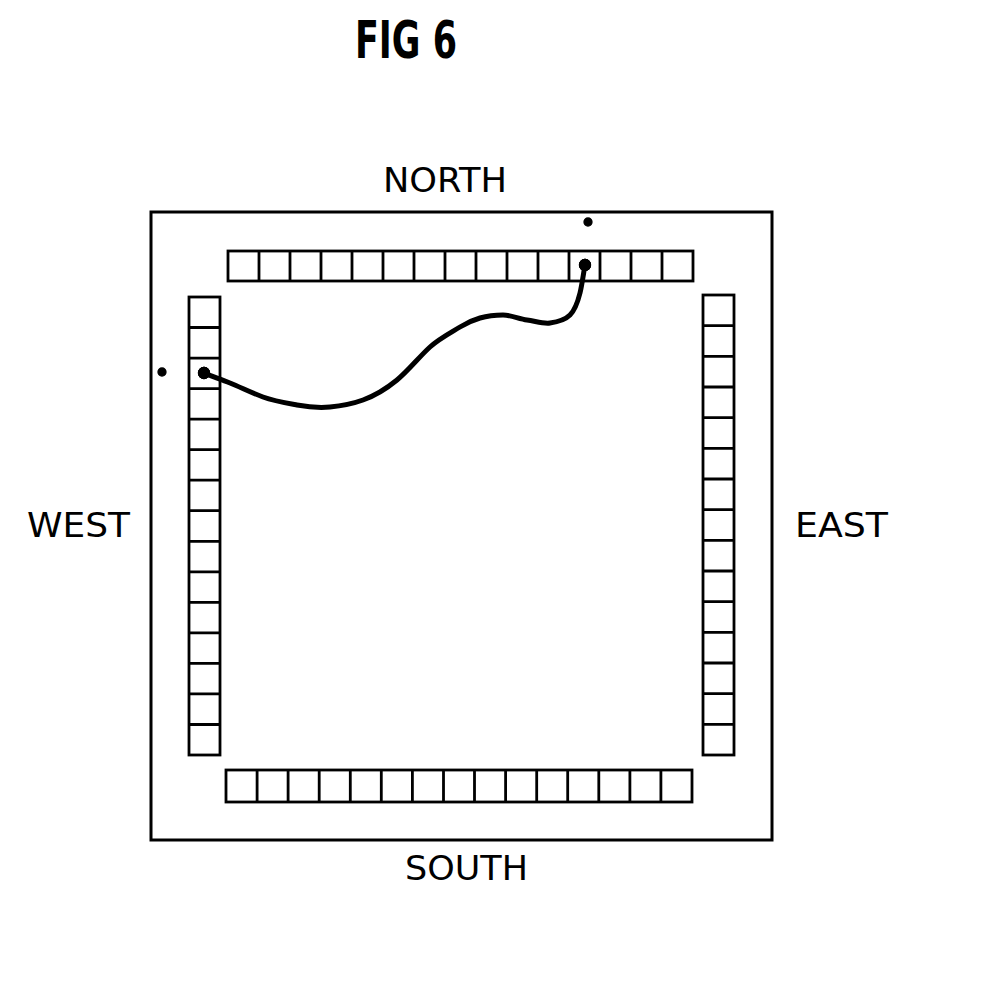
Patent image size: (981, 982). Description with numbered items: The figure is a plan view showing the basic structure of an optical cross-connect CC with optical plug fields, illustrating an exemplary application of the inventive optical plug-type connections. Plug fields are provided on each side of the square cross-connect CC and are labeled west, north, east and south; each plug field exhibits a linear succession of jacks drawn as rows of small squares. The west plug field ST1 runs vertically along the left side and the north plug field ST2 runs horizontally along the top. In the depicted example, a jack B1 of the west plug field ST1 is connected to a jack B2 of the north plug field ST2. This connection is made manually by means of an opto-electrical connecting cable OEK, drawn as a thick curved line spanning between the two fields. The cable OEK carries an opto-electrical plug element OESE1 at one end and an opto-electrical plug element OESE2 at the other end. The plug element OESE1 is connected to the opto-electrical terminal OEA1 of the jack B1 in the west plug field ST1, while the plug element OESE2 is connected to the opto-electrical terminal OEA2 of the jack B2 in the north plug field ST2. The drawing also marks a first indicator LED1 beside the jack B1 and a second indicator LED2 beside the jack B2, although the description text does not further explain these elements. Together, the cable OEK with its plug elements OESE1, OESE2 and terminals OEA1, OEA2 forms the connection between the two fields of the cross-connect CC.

The cross-connect CC is at (598, 865).
The west plug field ST1 is at (200, 768).
The north plug field ST2 is at (195, 267).
The jack B1 is at (204, 373).
The jack B2 is at (585, 265).
The first light emitting diode LED1 is at (162, 372).
The second light emitting diode LED2 is at (588, 222).
The opto-electrical terminal OEA1 is at (204, 373).
The opto-electrical terminal OEA2 is at (585, 265).
The opto-electrical plug element OESE1 is at (204, 373).
The opto-electrical plug element OESE2 is at (585, 265).
The opto-electrical connecting cable OEK is at (455, 335).